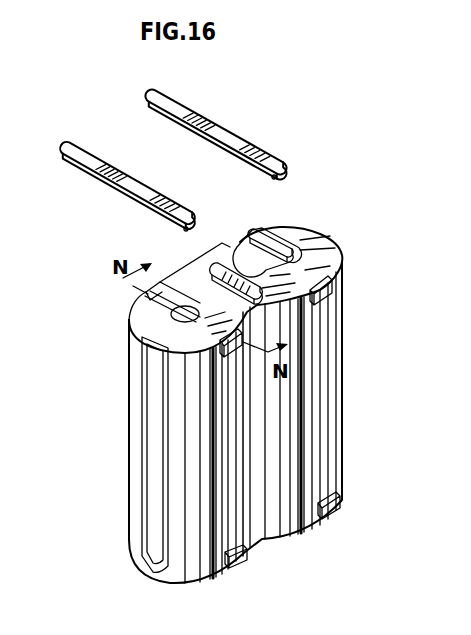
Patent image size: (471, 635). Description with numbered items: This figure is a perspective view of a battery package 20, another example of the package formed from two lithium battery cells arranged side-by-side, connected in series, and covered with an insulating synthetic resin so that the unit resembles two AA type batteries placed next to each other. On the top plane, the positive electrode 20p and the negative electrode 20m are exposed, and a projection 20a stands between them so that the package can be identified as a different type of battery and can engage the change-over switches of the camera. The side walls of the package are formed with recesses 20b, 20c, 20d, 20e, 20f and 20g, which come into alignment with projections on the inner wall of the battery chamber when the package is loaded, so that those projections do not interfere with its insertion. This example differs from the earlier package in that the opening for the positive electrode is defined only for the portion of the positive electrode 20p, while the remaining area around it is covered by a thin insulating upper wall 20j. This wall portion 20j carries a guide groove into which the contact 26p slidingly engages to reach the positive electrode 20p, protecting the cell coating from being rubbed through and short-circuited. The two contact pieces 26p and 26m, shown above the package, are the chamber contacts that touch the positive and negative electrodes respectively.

The battery package 20 is at (343, 396).
The projection 20a is at (220, 245).
The recess 20b is at (230, 358).
The recess 20c is at (333, 293).
The recess 20d is at (240, 246).
The recess 20e is at (153, 283).
The recess 20f is at (238, 568).
The recess 20g is at (325, 517).
The upper wall 20j is at (138, 297).
The negative electrode 20m is at (292, 258).
The positive electrode 20p is at (180, 318).
The contact 26m is at (278, 163).
The contact 26p is at (143, 194).